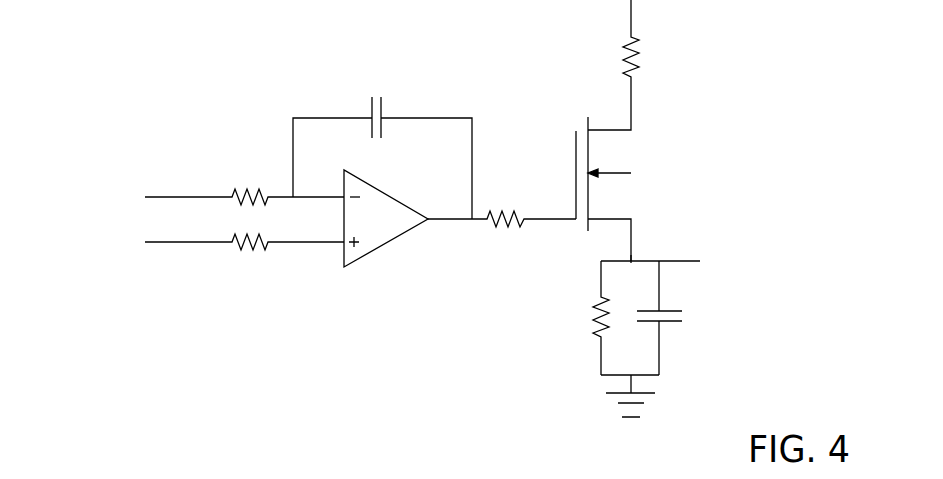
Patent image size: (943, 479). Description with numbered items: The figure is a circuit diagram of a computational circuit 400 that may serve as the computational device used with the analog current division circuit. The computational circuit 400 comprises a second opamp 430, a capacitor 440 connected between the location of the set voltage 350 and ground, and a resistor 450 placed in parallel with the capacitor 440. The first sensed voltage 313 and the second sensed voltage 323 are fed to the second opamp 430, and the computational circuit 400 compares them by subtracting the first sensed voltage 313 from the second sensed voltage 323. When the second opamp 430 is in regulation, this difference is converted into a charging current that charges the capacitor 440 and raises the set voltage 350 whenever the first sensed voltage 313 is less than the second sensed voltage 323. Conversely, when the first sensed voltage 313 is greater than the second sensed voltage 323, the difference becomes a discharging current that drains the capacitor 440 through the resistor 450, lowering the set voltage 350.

The computational circuit 400 is at (200, 60).
The first sensed voltage 313 is at (108, 160).
The second sensed voltage 323 is at (113, 243).
The second opamp 430 is at (387, 243).
The set voltage 350 is at (747, 240).
The capacitor 440 is at (693, 320).
The resistor 450 is at (578, 328).